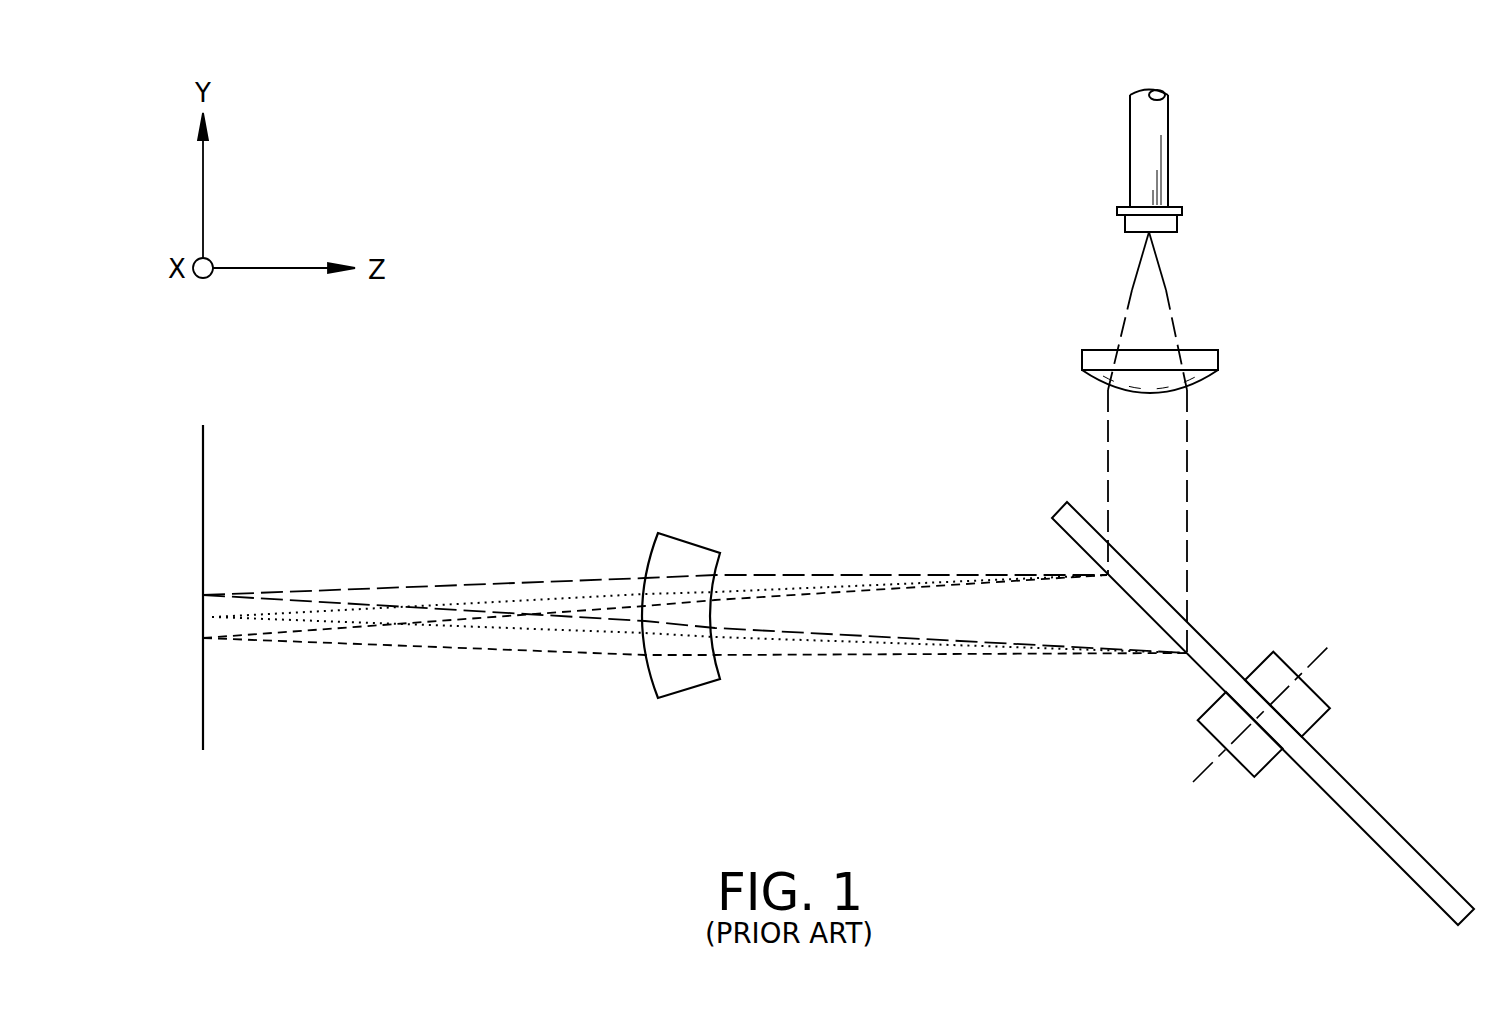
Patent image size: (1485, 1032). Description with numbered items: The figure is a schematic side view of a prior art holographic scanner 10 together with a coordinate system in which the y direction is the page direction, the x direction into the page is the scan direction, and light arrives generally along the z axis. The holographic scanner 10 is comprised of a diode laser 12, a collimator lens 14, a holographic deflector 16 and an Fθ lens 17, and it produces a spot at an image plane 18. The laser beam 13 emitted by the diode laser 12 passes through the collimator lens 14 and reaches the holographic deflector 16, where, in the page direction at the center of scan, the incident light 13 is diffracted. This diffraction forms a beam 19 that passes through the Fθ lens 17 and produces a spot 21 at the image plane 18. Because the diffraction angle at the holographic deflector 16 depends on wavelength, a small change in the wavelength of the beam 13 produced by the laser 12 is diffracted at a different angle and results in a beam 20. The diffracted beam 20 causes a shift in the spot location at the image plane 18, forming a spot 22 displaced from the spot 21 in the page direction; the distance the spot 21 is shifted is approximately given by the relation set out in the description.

The holographic scanner 10 is at (667, 405).
The diode laser 12 is at (1168, 147).
The laser beam 13 is at (1170, 317).
The collimator lens 14 is at (1082, 362).
The holographic deflector 16 is at (1355, 787).
The Fθ lens 17 is at (650, 682).
The image plane 18 is at (203, 457).
The beam 19 is at (992, 575).
The diffracted beam 20 is at (888, 575).
The spot 21 is at (203, 595).
The spot 22 is at (203, 640).